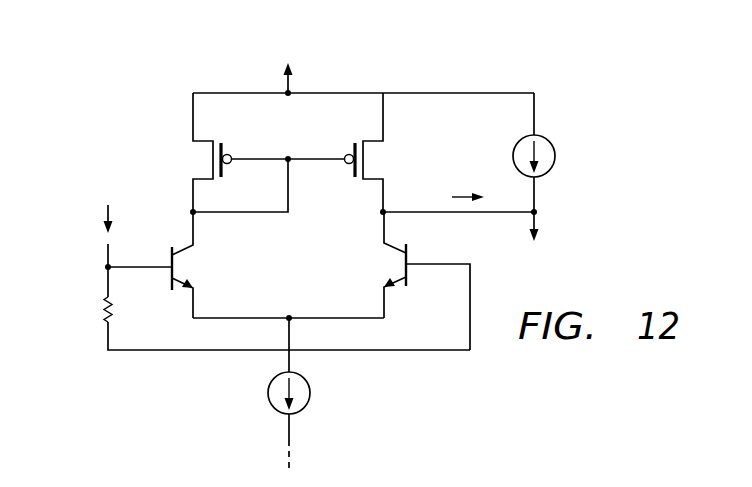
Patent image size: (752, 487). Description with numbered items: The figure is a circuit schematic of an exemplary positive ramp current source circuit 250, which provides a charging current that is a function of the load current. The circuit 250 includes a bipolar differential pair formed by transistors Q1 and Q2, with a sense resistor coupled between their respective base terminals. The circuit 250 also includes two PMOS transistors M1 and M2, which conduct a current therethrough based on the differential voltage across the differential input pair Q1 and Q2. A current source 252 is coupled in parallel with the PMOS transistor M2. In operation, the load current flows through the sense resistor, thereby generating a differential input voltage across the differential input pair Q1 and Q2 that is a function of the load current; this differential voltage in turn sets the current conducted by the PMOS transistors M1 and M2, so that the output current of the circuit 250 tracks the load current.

The positive ramp current source circuit 250 is at (176, 60).
The current source 252 is at (544, 138).
The PMOS transistor M1 is at (204, 152).
The PMOS transistor M2 is at (373, 152).
The bipolar transistor of differential pair Q1 is at (191, 265).
The bipolar transistor of differential pair Q2 is at (386, 265).